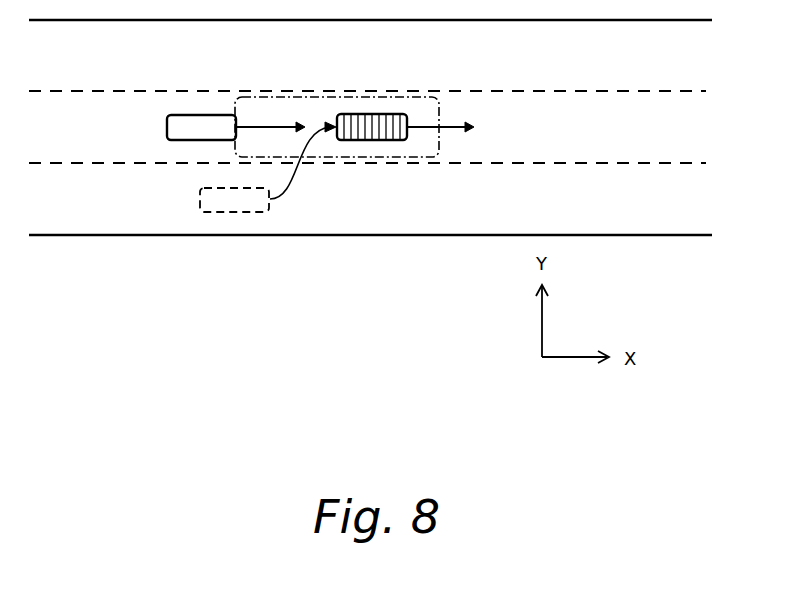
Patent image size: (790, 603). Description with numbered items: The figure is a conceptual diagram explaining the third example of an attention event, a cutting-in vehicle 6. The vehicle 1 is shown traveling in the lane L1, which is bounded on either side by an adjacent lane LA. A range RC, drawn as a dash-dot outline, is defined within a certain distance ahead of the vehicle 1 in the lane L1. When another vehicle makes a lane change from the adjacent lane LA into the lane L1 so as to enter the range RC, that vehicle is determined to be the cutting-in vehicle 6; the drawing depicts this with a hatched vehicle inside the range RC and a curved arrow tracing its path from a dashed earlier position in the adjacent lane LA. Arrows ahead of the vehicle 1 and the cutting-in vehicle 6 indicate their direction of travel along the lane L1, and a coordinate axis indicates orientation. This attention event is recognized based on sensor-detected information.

The vehicle 1 is at (168, 118).
The cutting-in vehicle 6 is at (373, 140).
The range RC is at (323, 95).
The adjacent lane LA is at (658, 67).
The lane L1 is at (657, 139).